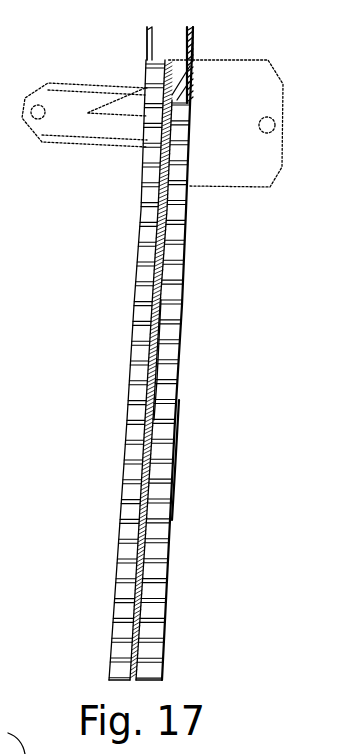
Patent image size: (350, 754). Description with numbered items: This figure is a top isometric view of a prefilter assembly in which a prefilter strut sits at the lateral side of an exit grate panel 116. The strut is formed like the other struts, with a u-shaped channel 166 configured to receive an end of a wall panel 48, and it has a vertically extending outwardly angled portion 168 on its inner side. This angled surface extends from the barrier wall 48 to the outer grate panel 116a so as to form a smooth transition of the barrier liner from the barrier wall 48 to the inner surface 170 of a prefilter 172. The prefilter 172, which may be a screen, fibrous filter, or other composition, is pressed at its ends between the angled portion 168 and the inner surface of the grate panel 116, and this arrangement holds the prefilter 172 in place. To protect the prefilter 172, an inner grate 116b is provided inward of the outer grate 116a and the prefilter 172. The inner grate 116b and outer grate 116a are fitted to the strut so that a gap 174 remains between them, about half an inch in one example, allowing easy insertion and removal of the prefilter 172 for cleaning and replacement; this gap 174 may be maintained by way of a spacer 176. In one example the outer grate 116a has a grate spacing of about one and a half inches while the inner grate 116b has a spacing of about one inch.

The wall panel 48 is at (177, 35).
The u-shaped channel 166 is at (177, 56).
The outwardly angled portion 168 is at (183, 80).
The spacer 176 is at (162, 138).
The exit grate panel 116 is at (173, 353).
The outer grate panel 116a is at (141, 203).
The inner grate 116b is at (178, 332).
The prefilter 172 is at (157, 370).
The gap 174 is at (160, 400).
The inner surface 170 is at (173, 470).